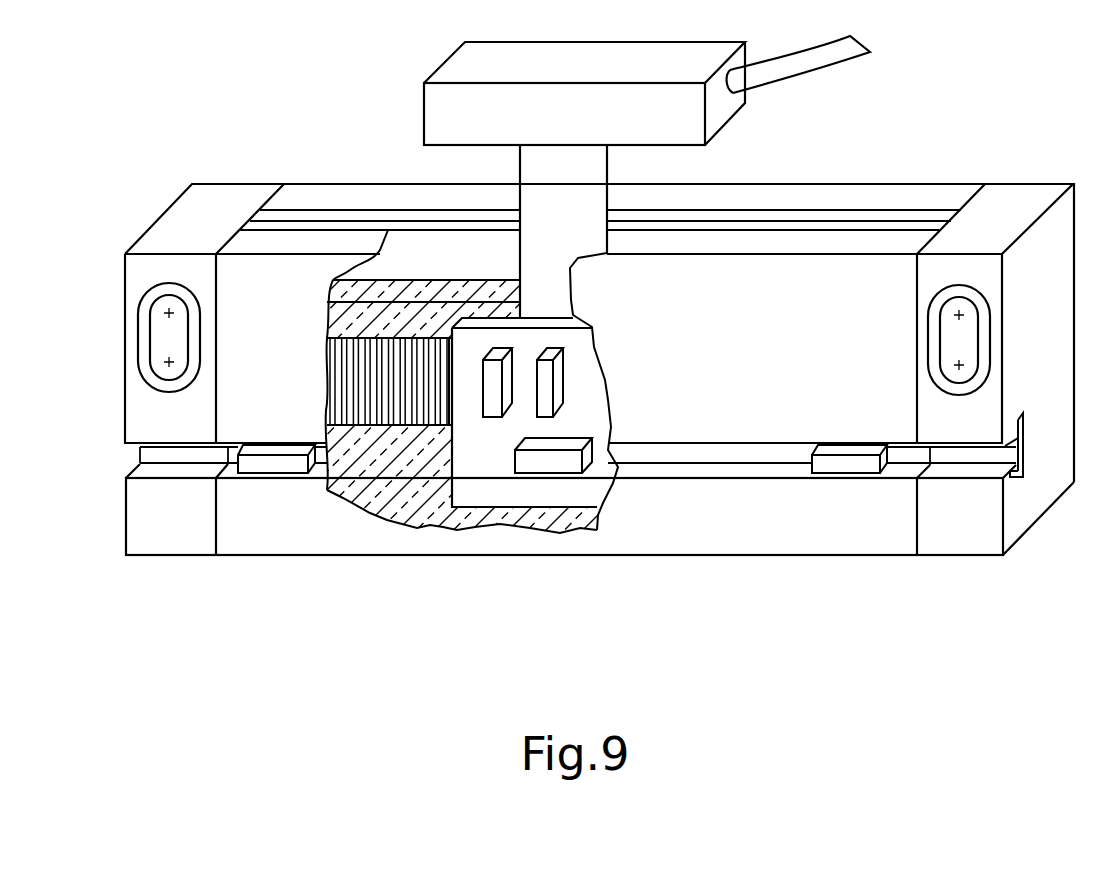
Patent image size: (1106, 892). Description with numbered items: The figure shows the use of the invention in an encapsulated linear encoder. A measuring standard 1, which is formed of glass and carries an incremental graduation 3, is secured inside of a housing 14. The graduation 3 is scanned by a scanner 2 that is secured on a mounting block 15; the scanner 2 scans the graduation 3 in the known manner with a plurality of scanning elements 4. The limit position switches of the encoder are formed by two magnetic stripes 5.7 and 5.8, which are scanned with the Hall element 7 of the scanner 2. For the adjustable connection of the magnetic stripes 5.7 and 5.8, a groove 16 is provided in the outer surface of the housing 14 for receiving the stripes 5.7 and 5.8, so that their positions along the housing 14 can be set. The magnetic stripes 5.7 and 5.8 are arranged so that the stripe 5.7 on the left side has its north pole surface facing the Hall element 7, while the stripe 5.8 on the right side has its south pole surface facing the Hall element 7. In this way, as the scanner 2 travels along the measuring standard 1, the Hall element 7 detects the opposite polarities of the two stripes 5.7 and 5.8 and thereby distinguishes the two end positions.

The measuring standard 1 is at (427, 515).
The scanner 2 is at (492, 497).
The incremental graduation 3 is at (352, 365).
The scanning elements 4 is at (555, 348).
The Hall element 7 is at (558, 467).
The magnetic stripe 5.7 is at (302, 470).
The magnetic stripe 5.8 is at (868, 474).
The housing 14 is at (327, 190).
The mounting block 15 is at (423, 107).
The groove 16 is at (1018, 452).